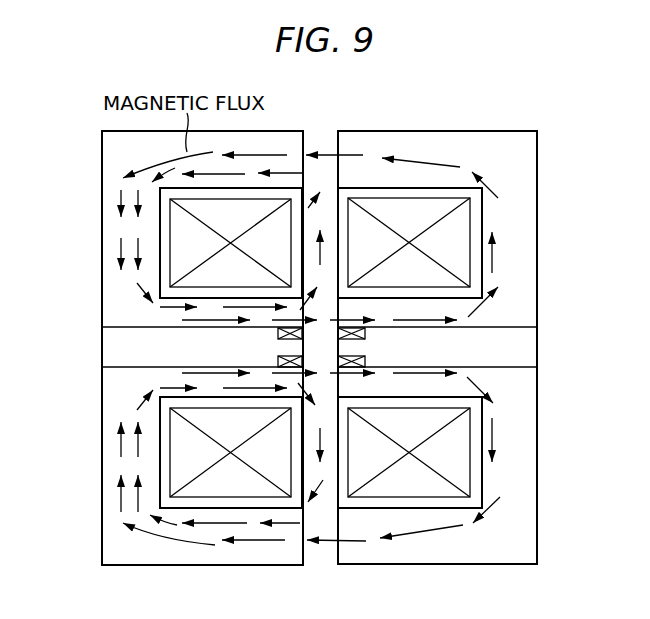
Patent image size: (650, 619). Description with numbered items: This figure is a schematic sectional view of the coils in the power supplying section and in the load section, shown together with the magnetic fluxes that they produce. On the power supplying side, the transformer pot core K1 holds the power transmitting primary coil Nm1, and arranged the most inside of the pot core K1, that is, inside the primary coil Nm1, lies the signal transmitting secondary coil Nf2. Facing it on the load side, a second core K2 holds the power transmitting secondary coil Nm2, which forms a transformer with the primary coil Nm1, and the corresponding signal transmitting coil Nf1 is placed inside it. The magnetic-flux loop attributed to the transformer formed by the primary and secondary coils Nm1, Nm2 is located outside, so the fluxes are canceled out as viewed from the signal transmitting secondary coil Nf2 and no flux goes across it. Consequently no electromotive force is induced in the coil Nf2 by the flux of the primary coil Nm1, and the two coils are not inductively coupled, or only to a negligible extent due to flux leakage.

The transformer pot core K1 is at (103, 143).
The second core (yoke) K2 is at (538, 141).
The power transmitting primary coil Nm1 is at (170, 433).
The power transmitting secondary coil Nm2 is at (472, 432).
The first auxiliary (focusing) coil Nf1 is at (365, 333).
The signal transmitting secondary coil Nf2 is at (278, 333).